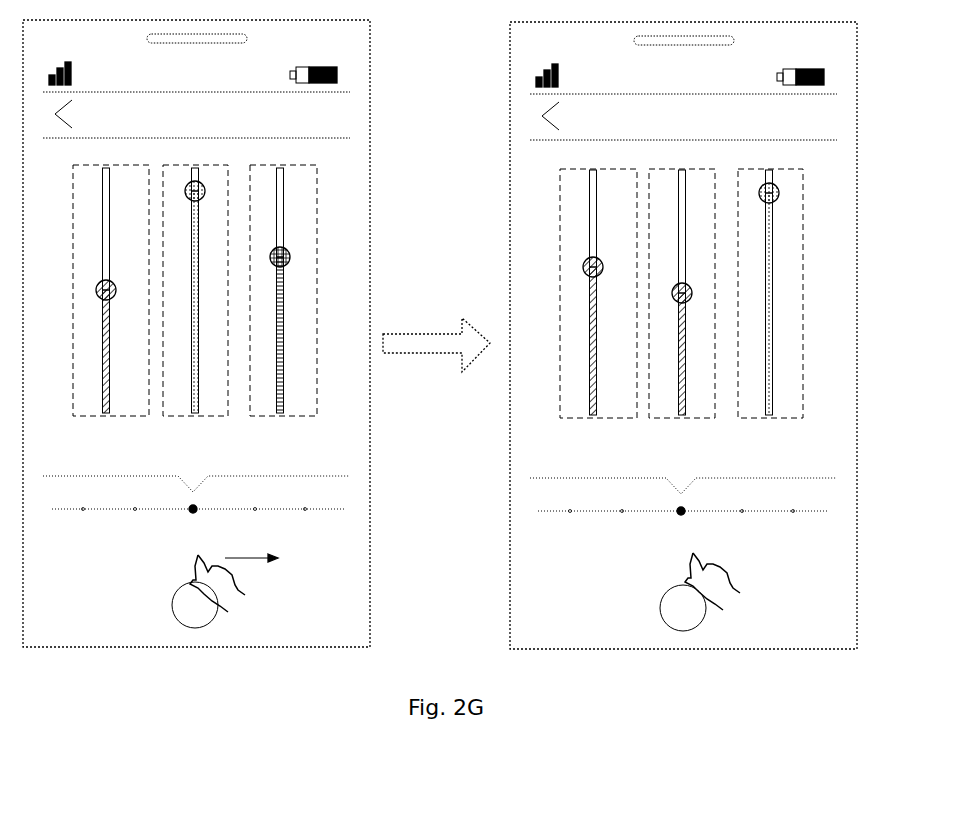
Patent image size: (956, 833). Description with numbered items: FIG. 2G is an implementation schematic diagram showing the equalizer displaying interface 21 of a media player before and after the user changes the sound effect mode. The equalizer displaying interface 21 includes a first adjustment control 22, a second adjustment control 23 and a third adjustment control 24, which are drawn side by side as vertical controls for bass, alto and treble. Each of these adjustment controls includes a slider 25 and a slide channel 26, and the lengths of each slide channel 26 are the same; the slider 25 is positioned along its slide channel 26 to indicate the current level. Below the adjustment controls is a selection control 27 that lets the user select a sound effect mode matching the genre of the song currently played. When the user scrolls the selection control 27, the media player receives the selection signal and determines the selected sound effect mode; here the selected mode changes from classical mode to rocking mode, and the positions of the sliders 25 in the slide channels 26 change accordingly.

The equalizer displaying interface 21 is at (350, 126).
The first adjustment control 22 is at (107, 168).
The second adjustment control 23 is at (196, 168).
The third adjustment control 24 is at (281, 168).
The slider 25 is at (96, 291).
The slide channel 26 is at (108, 340).
The selection control 27 is at (350, 525).